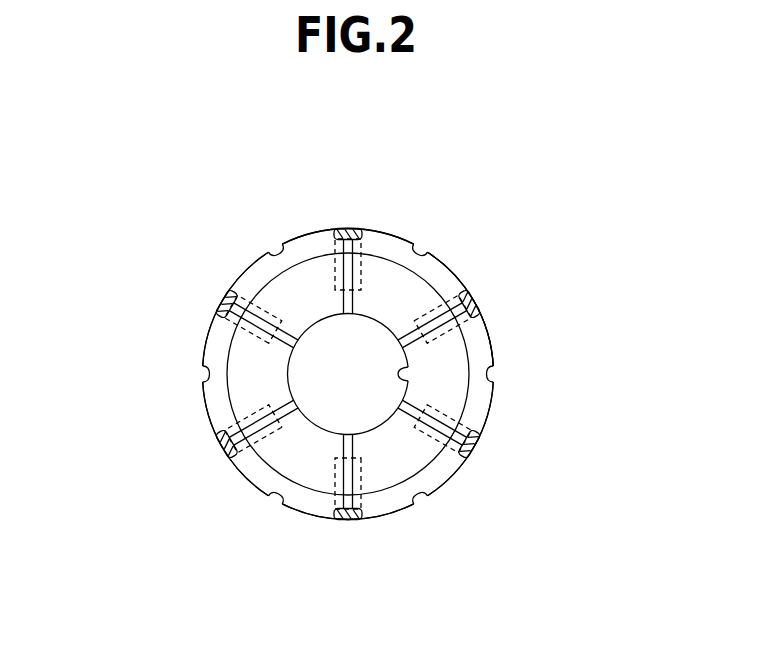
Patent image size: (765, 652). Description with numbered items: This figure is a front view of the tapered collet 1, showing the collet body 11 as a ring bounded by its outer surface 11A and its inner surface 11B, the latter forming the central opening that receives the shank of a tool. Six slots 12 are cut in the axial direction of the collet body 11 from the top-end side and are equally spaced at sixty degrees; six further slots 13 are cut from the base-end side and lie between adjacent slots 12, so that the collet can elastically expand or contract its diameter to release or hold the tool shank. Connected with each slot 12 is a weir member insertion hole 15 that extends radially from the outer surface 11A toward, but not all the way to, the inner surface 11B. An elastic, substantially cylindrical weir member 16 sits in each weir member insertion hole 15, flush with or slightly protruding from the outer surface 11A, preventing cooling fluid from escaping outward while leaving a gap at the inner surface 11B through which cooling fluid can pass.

The tapered collet 1 is at (575, 229).
The collet body 11 is at (388, 233).
The outer surface 11A is at (494, 340).
The inner surface 11B is at (411, 377).
The slots 12 is at (343, 306).
The slots 13 is at (424, 243).
The weir member insertion holes 15 is at (373, 232).
The weir members 16 is at (348, 228).